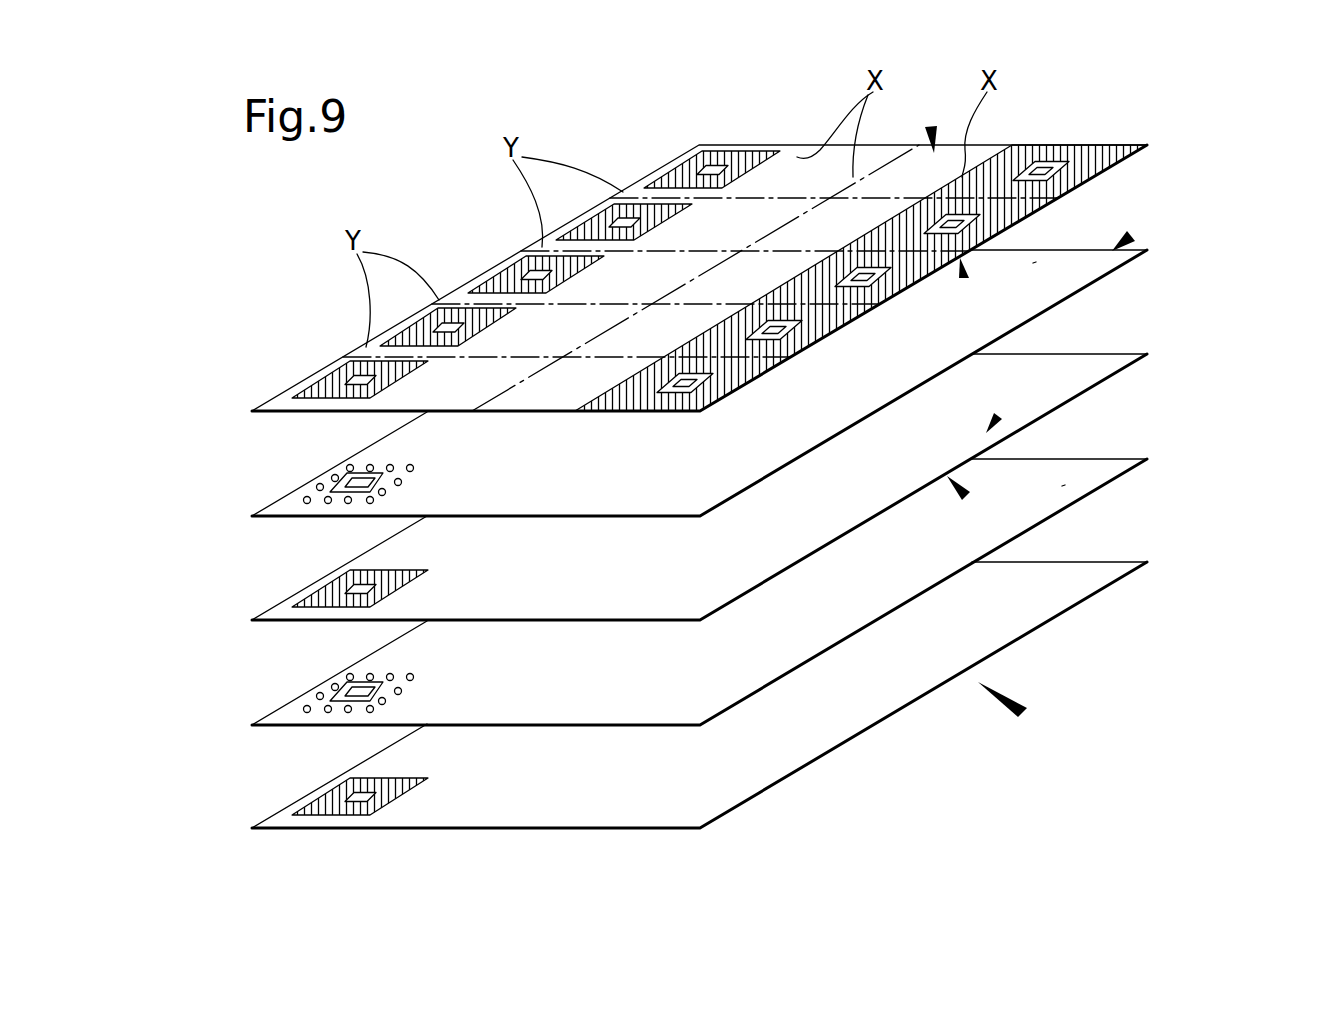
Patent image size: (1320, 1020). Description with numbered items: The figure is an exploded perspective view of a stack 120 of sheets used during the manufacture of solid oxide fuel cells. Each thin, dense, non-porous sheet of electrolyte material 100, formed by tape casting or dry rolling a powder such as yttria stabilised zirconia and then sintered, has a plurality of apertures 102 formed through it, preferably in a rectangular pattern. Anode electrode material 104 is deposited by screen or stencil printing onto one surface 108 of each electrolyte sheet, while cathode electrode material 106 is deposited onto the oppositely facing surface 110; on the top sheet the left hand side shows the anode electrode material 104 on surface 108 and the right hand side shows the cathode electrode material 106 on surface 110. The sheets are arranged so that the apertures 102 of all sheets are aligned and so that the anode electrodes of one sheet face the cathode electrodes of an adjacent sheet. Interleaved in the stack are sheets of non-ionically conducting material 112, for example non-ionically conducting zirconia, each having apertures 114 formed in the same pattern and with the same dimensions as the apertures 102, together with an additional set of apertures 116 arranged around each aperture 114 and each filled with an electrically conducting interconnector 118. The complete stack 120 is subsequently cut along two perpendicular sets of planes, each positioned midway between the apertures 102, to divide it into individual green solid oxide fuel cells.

The sheet of electrolyte material 100 is at (1125, 158).
The apertures 102 is at (355, 380).
The anode electrode material 104 is at (303, 392).
The cathode electrode material 106 is at (1078, 160).
The surface 108 is at (933, 128).
The oppositely facing surface 110 is at (964, 278).
The sheet of non-ionically conducting material 112 is at (1033, 263).
The apertures 114 is at (347, 473).
The additional apertures 116 is at (317, 484).
The electrically conducting interconnector 118 is at (308, 504).
The stack 120 is at (1024, 710).